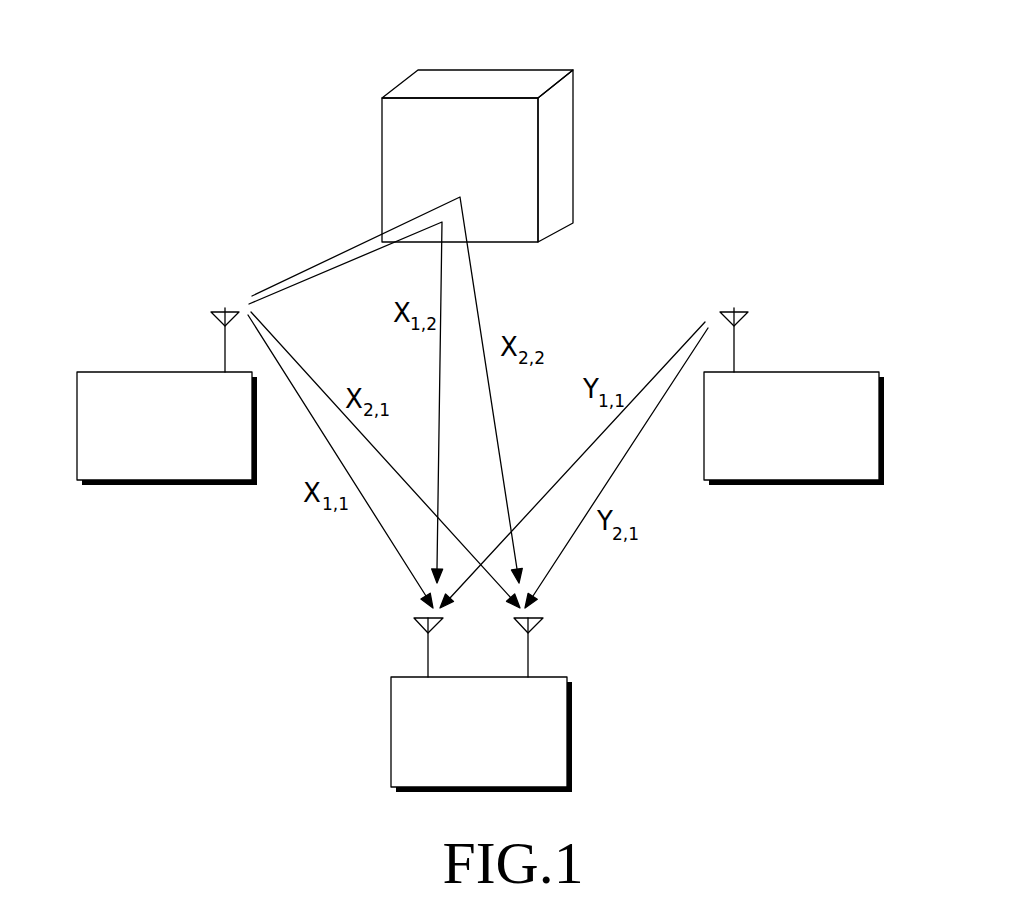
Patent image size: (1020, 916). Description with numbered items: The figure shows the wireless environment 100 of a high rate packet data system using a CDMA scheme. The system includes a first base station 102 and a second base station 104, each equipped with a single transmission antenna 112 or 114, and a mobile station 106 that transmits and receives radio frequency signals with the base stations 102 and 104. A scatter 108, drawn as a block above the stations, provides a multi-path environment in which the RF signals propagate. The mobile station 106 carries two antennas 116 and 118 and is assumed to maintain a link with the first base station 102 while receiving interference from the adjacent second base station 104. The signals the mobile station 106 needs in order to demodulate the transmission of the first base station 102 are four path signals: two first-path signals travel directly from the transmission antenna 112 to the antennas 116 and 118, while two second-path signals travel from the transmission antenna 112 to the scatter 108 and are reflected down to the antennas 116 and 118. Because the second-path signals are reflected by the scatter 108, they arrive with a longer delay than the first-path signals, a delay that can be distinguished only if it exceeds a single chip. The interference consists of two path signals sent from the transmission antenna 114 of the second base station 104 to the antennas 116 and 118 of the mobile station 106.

The wireless communication system 100 is at (284, 202).
The first base station 102 is at (146, 372).
The second base station 104 is at (812, 372).
The mobile station 106 is at (391, 733).
The scatter 108 is at (488, 69).
The transmission antenna 112 is at (225, 308).
The transmission antenna 114 is at (734, 308).
The antenna 116 is at (414, 621).
The antenna 118 is at (546, 620).